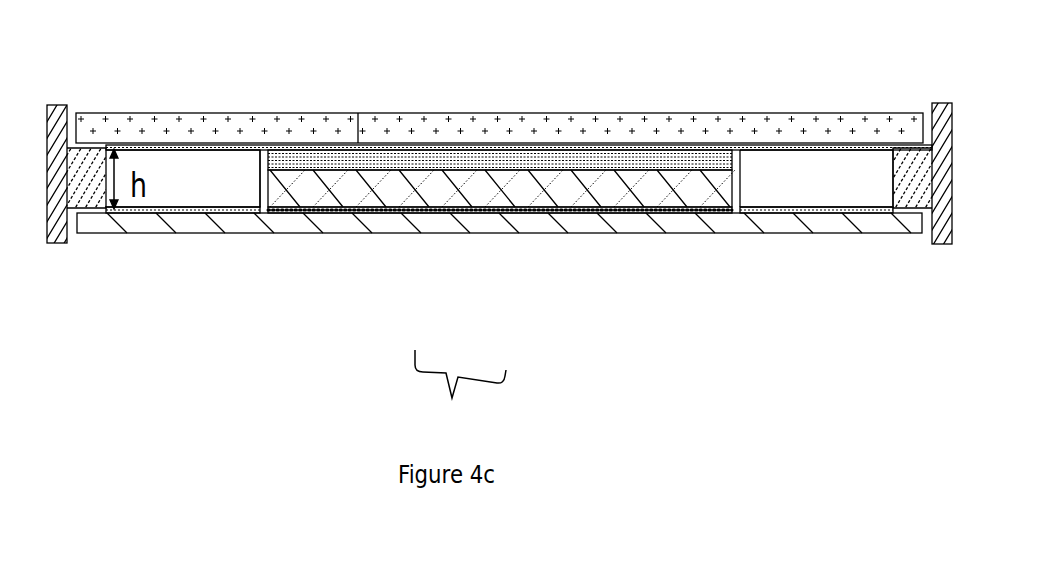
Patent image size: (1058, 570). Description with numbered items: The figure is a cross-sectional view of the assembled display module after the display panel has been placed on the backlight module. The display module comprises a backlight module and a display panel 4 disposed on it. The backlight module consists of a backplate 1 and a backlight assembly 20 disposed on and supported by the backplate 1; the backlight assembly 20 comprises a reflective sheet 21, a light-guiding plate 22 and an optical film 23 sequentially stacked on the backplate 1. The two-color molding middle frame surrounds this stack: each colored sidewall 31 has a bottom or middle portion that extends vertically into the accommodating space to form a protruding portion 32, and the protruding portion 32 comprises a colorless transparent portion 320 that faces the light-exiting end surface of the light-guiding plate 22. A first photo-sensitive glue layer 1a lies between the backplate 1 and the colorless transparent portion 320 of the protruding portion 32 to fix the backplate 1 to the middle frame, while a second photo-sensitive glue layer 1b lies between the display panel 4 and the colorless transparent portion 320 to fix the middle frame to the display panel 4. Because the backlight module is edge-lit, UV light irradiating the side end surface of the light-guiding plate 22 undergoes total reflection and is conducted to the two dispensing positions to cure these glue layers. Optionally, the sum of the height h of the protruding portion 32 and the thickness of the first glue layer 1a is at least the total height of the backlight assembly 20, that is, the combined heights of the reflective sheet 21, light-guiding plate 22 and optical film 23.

The backplate 1 is at (330, 225).
The first photo-sensitive glue layer 1a is at (193, 210).
The second photo-sensitive glue layer 1b is at (173, 147).
The display panel 4 is at (263, 138).
The backlight assembly 20 is at (459, 402).
The reflective sheet 21 is at (395, 207).
The light-guiding plate 22 is at (440, 197).
The optical film 23 is at (517, 177).
The sidewall 31 is at (58, 105).
The protruding portion 32 is at (93, 210).
The colorless transparent portion 320 is at (220, 185).